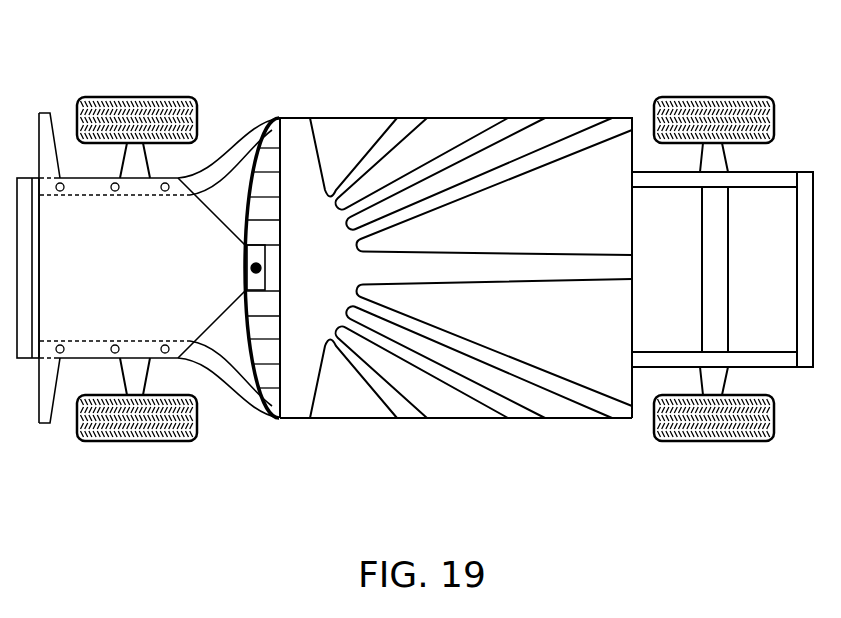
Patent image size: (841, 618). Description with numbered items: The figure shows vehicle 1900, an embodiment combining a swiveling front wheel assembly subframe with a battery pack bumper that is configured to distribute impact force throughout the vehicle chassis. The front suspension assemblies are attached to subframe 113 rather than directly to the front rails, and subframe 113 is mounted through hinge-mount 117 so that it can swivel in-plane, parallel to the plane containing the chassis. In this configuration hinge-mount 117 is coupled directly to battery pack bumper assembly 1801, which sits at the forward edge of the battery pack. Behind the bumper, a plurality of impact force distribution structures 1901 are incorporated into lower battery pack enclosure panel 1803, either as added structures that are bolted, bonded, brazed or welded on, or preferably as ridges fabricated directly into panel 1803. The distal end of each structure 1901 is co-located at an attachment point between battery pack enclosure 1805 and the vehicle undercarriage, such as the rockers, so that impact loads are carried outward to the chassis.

The vehicle 1900 is at (603, 71).
The impact force distribution structures 1901 is at (378, 157).
The battery pack bumper assembly 1801 is at (238, 198).
The lower battery pack enclosure panel 1803 is at (500, 241).
The battery pack enclosure 1805 is at (512, 428).
The subframe 113 is at (147, 277).
The hinge-mount 117 is at (262, 267).